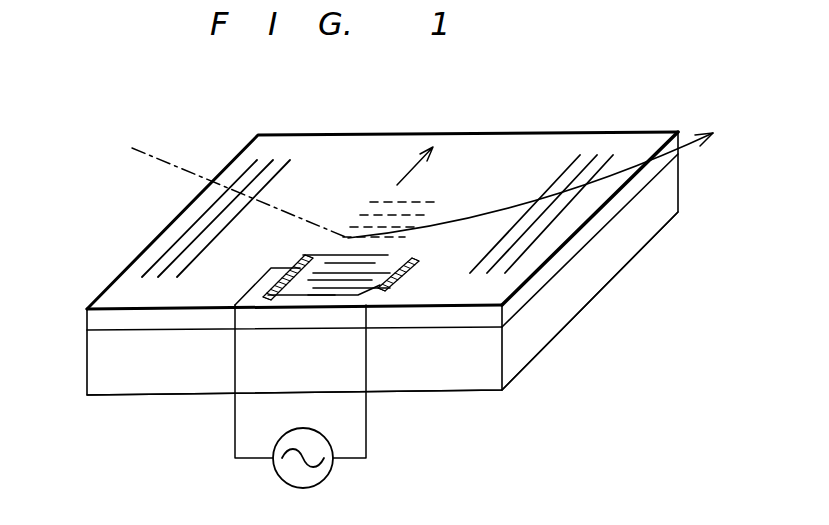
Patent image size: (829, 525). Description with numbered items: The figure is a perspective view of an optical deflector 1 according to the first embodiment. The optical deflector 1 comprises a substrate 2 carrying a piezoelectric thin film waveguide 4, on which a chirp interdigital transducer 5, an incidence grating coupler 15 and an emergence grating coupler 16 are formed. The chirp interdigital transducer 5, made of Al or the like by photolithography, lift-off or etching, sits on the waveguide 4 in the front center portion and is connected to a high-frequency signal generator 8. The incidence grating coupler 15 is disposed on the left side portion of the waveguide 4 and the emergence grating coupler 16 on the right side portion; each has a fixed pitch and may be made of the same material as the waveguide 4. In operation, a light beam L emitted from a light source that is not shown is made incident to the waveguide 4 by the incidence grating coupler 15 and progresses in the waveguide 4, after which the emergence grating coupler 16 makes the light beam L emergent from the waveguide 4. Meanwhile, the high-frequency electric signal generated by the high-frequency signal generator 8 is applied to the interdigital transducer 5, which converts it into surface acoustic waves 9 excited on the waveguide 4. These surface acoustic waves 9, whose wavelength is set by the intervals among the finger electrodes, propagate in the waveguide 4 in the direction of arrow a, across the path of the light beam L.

The optical deflector 1 is at (95, 212).
The substrate 2 is at (567, 313).
The piezoelectric thin film waveguide 4 is at (583, 240).
The chirp interdigital transducer 5 is at (353, 290).
The high-frequency signal generator 8 is at (328, 473).
The surface acoustic waves 9 is at (413, 202).
The incidence grating coupler 15 is at (196, 263).
The emergence grating coupler 16 is at (572, 207).
The light beam L is at (310, 226).
The arrow a is at (408, 166).